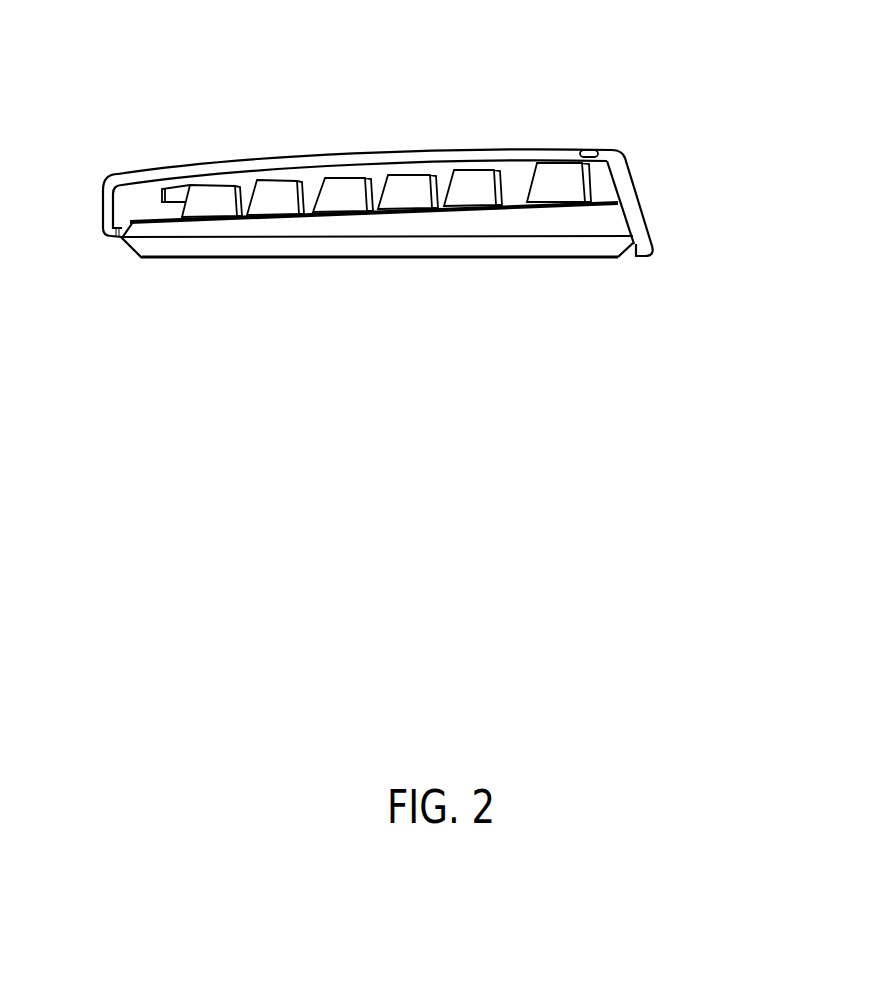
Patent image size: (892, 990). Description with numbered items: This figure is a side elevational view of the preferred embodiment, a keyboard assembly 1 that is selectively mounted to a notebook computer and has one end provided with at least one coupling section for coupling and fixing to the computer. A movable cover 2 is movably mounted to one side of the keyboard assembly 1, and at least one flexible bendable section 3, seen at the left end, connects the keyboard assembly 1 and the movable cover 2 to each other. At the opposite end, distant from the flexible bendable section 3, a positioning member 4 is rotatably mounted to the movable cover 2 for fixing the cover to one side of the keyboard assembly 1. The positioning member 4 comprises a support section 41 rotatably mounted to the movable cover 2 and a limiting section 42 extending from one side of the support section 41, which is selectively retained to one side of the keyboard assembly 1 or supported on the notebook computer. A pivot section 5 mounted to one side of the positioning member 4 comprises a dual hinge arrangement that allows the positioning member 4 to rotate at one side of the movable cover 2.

The keyboard assembly 1 is at (367, 258).
The movable cover 2 is at (330, 157).
The flexible bendable section 3 is at (103, 210).
The positioning member 4 is at (700, 239).
The support section 41 is at (633, 188).
The limiting section 42 is at (680, 290).
The pivot section 5 is at (593, 150).